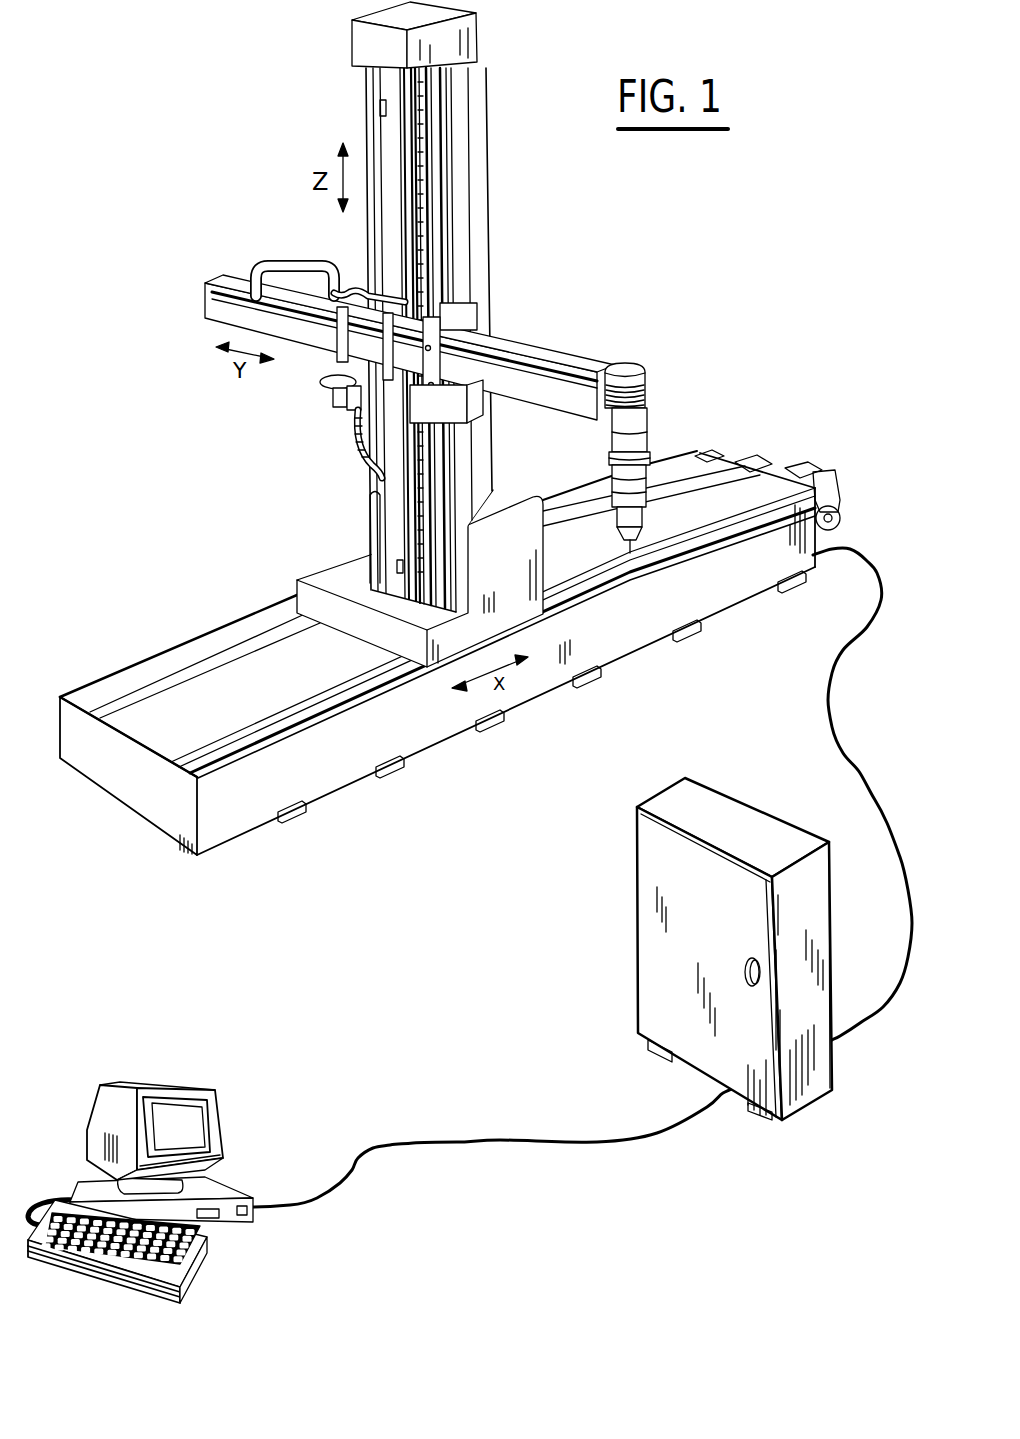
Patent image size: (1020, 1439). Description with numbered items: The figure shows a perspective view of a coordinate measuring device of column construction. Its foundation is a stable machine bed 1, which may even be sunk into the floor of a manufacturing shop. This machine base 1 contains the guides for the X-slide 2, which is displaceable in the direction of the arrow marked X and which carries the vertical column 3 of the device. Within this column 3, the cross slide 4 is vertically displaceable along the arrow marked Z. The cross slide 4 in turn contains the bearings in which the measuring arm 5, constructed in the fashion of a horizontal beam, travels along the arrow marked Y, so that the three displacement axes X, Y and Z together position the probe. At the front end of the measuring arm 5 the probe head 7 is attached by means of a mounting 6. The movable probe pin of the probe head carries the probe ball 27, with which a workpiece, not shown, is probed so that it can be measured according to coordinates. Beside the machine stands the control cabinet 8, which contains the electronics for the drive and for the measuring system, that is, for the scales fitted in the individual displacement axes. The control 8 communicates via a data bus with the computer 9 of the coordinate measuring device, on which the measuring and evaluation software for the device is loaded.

The machine bed 1 is at (428, 730).
The X-slide 2 is at (327, 577).
The vertical column 3 is at (478, 217).
The cross slide 4 is at (487, 303).
The measuring arm 5 is at (545, 353).
The mounting 6 is at (645, 390).
The probe head 7 is at (652, 452).
The control cabinet 8 is at (743, 823).
The computer 9 is at (175, 1120).
The probe ball 27 is at (670, 552).